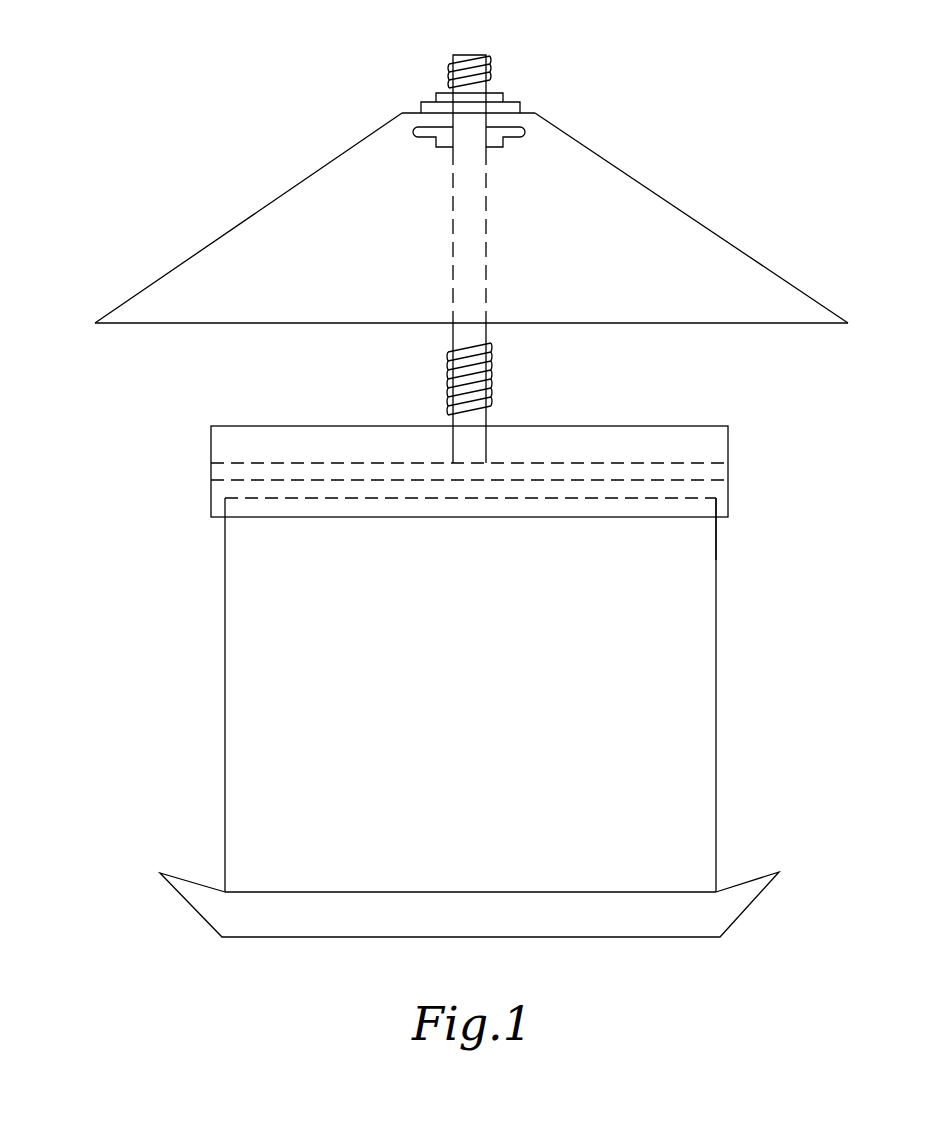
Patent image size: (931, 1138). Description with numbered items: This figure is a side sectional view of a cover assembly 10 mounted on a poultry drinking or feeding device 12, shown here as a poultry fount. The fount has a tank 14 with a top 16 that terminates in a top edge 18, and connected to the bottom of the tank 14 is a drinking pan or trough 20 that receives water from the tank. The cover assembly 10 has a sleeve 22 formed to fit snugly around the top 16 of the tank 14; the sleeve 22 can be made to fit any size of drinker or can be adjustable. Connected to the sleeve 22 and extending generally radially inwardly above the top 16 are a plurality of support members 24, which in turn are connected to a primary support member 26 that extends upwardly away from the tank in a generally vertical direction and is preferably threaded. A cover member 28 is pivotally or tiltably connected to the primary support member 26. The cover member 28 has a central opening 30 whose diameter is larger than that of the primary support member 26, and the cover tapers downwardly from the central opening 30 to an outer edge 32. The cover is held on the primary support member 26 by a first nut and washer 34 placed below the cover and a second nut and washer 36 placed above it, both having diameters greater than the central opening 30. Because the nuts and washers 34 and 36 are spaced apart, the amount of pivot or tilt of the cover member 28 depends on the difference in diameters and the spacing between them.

The cover assembly 10 is at (688, 82).
The poultry drinking or feeding device 12 is at (715, 680).
The tank 14 is at (490, 697).
The top 16 is at (718, 518).
The top edge 18 is at (695, 498).
The drinking pan or trough 20 is at (210, 902).
The sleeve 22 is at (713, 443).
The support members 24 is at (697, 482).
The primary support member 26 is at (450, 353).
The cover member 28 is at (568, 133).
The central opening 30 is at (532, 112).
The outer edge 32 is at (97, 325).
The first nut and washer 34 is at (444, 148).
The second nut and washer 36 is at (495, 92).